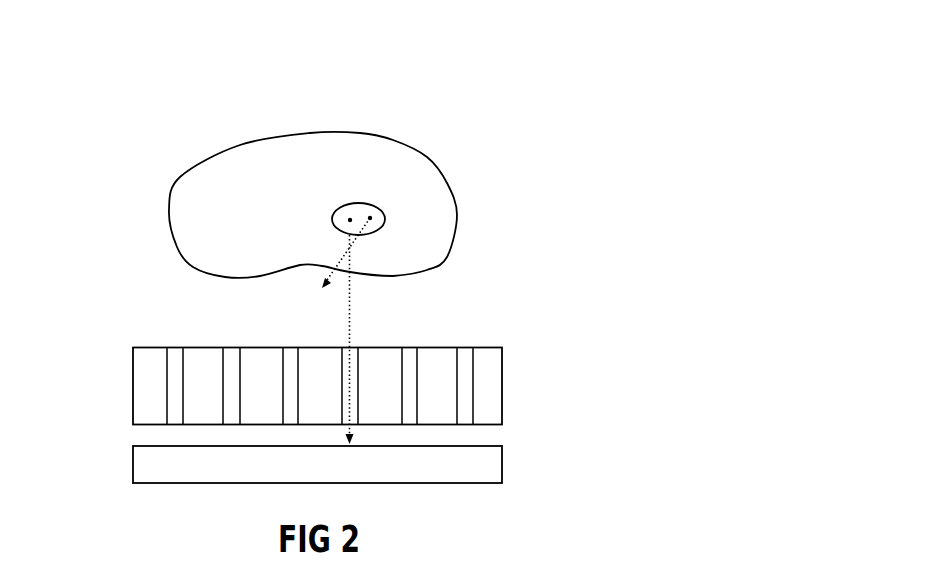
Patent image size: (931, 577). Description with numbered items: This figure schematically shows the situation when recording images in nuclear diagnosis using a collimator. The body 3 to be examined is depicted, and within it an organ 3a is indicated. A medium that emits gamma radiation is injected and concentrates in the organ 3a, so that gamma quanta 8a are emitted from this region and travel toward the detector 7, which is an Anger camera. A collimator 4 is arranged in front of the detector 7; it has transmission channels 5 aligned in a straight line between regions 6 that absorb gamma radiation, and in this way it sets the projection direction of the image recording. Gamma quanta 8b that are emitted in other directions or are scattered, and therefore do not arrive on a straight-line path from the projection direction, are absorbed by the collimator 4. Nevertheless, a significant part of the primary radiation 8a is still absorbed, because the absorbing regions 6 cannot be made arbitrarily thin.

The body 3 is at (413, 178).
The organ 3a is at (385, 218).
The collimator 4 is at (502, 390).
The transmission channels 5 is at (227, 347).
The regions that absorb gamma radiation 6 is at (203, 383).
The detector 7 is at (502, 463).
The gamma quanta 8a is at (349, 314).
The gamma quanta 8b is at (332, 274).